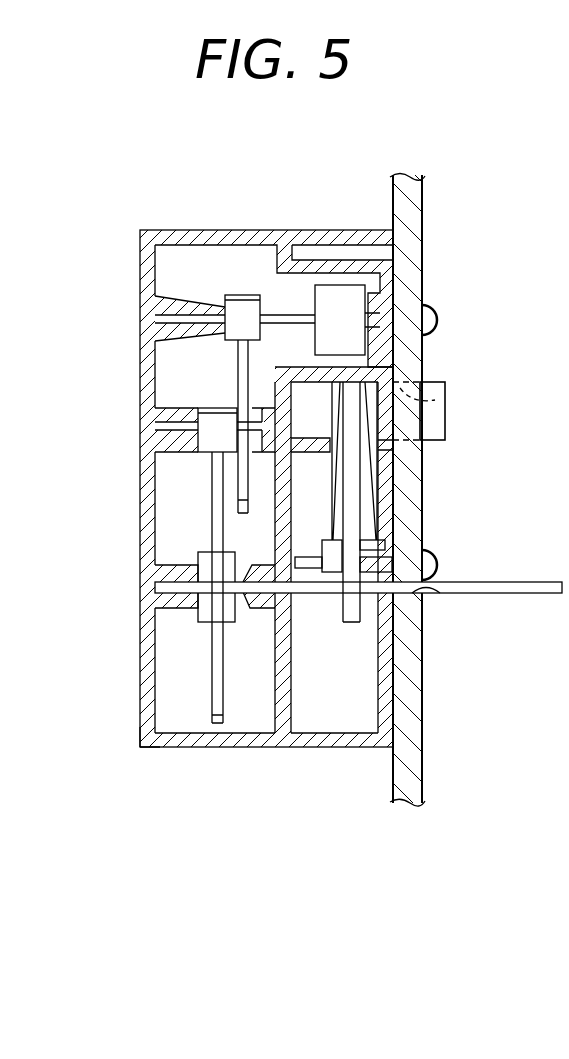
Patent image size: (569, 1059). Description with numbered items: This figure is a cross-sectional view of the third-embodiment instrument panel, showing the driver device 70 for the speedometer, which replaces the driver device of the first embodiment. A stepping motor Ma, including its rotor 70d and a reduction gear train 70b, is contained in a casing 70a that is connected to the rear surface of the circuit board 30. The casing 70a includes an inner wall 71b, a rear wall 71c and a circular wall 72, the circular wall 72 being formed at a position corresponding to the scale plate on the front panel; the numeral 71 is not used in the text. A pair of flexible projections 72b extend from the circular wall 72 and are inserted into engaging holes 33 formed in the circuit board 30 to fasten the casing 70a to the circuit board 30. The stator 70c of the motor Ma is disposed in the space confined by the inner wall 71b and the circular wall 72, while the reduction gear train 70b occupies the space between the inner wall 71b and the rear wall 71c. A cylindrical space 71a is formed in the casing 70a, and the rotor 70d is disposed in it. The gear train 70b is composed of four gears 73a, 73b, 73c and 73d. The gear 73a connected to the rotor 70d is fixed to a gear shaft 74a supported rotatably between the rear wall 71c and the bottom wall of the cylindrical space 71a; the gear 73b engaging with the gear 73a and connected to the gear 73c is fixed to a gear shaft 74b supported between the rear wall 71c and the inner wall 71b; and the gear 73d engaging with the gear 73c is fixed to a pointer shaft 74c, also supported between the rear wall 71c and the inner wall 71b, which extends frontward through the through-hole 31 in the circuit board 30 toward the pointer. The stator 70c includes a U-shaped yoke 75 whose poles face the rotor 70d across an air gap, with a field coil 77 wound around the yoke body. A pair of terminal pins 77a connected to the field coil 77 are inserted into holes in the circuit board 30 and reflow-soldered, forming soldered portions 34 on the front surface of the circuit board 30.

The driver device 70 is at (186, 220).
The casing 70a is at (150, 755).
The reduction gear train 70b is at (184, 458).
The stator 70c is at (386, 478).
The rotor 70d is at (382, 293).
The case 71 is at (183, 749).
The cylindrical space 71a is at (372, 252).
The inner wall 71b is at (298, 692).
The rear wall 71c is at (140, 656).
The circular wall 72 is at (332, 749).
The flexible projections 72b is at (446, 426).
The gear 73a is at (240, 295).
The gear 73b is at (238, 375).
The gear 73c is at (216, 406).
The gear 73d is at (210, 510).
The gear shaft 74a is at (280, 308).
The gear shaft 74b is at (165, 428).
The pointer shaft 74c is at (257, 610).
The yoke 75 is at (352, 623).
The field coil 77 is at (382, 506).
The terminal pins 77a is at (377, 574).
The circuit board 30 is at (436, 190).
The through-hole 31 is at (441, 597).
The engaging holes 33 is at (405, 386).
The soldered portions 34 is at (437, 320).
The motor Ma is at (340, 282).